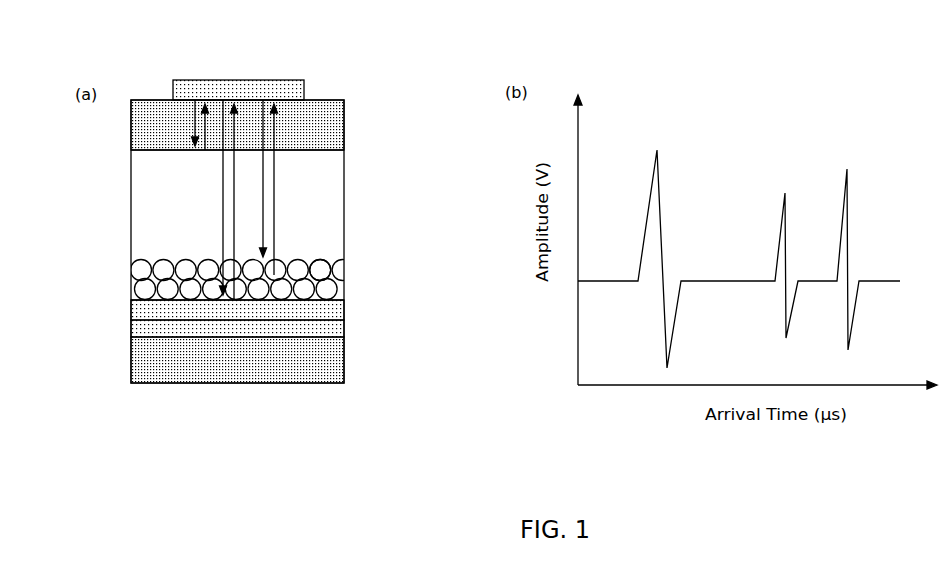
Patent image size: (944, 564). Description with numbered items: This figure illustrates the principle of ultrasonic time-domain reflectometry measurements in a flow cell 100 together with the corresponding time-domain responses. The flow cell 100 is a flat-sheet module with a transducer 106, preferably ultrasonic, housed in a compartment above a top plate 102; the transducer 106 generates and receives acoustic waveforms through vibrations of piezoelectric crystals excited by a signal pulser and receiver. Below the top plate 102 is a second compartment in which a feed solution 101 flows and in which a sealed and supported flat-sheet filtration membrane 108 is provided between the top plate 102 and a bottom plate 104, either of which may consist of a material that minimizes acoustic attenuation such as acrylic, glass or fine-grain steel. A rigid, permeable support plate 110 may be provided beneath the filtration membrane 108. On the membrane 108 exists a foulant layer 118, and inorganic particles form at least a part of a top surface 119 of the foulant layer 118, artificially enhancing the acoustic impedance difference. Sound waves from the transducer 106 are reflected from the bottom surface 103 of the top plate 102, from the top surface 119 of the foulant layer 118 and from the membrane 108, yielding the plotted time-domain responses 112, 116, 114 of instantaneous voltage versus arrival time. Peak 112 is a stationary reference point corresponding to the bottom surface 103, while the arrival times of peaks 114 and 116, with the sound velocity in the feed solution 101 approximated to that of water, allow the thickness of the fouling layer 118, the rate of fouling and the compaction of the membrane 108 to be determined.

The flow cell 100 is at (338, 46).
The feed solution 101 is at (152, 231).
The top plate 102 is at (335, 135).
The bottom surface of the top plate 103 is at (156, 150).
The bottom plate 104 is at (237, 360).
The transducer 106 is at (238, 92).
The filtration membrane 108 is at (237, 311).
The support plate 110 is at (237, 330).
The reference peak 112 is at (215, 150).
The test waveform peak 114 is at (236, 165).
The test waveform peak 116 is at (275, 165).
The foulant layer 118 is at (347, 262).
The top surface of the foulant layer 119 is at (323, 260).